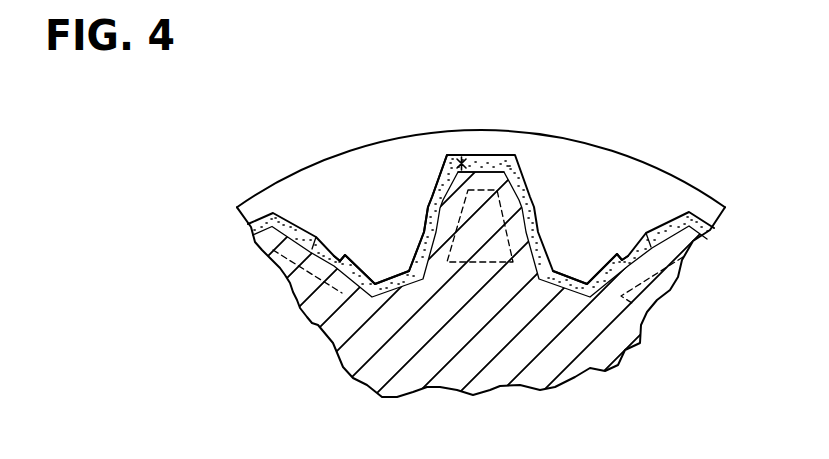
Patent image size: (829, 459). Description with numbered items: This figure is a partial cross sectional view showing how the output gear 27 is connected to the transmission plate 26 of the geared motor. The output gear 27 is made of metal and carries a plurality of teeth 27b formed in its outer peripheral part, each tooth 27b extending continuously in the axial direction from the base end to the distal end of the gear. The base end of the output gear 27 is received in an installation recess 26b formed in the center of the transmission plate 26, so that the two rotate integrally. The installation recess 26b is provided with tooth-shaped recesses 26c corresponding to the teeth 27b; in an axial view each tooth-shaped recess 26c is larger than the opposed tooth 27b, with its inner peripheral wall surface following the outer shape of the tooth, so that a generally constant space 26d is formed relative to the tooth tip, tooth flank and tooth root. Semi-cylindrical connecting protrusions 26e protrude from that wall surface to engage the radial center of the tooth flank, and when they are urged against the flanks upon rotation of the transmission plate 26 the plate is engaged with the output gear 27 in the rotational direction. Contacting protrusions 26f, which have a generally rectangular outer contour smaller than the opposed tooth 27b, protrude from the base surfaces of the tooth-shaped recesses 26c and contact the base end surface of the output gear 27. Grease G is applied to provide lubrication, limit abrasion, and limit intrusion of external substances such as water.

The transmission plate 26 is at (613, 152).
The installation recess 26b is at (440, 183).
The tooth-shaped recess 26c is at (485, 157).
The space 26d is at (462, 160).
The connecting protrusion 26e is at (433, 208).
The contacting protrusion 26f is at (522, 180).
The output gear 27 is at (531, 379).
The tooth 27b is at (504, 172).
The grease G is at (541, 282).